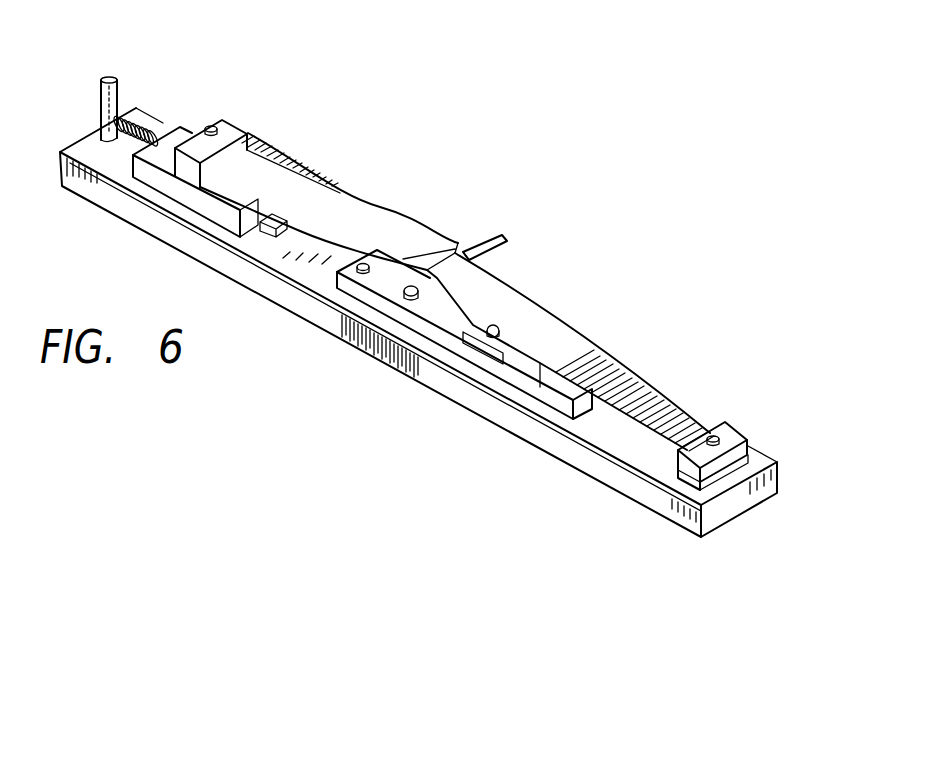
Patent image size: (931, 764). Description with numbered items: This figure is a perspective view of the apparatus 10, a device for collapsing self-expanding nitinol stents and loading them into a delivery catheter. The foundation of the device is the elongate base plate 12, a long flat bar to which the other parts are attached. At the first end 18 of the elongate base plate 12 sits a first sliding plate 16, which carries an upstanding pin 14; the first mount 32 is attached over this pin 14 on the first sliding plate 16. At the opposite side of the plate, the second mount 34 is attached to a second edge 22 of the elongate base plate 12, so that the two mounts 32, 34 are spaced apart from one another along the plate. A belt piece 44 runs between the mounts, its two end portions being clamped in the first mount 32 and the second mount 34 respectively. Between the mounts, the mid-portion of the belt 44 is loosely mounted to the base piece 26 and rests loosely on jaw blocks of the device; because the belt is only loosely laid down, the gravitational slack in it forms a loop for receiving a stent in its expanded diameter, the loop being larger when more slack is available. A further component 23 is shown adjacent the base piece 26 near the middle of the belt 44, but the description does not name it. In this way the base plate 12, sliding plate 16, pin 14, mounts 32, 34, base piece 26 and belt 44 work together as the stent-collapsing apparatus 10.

The apparatus 10 is at (470, 198).
The elongate base plate 12 is at (298, 306).
The pin 14 is at (110, 74).
The first sliding plate 16 is at (187, 193).
The first end 18 is at (73, 147).
The second edge 22 is at (737, 509).
The bracket 23 is at (503, 238).
The base piece 26 is at (563, 392).
The first mount 32 is at (192, 143).
The second mount 34 is at (690, 480).
The belt piece 44 is at (568, 338).